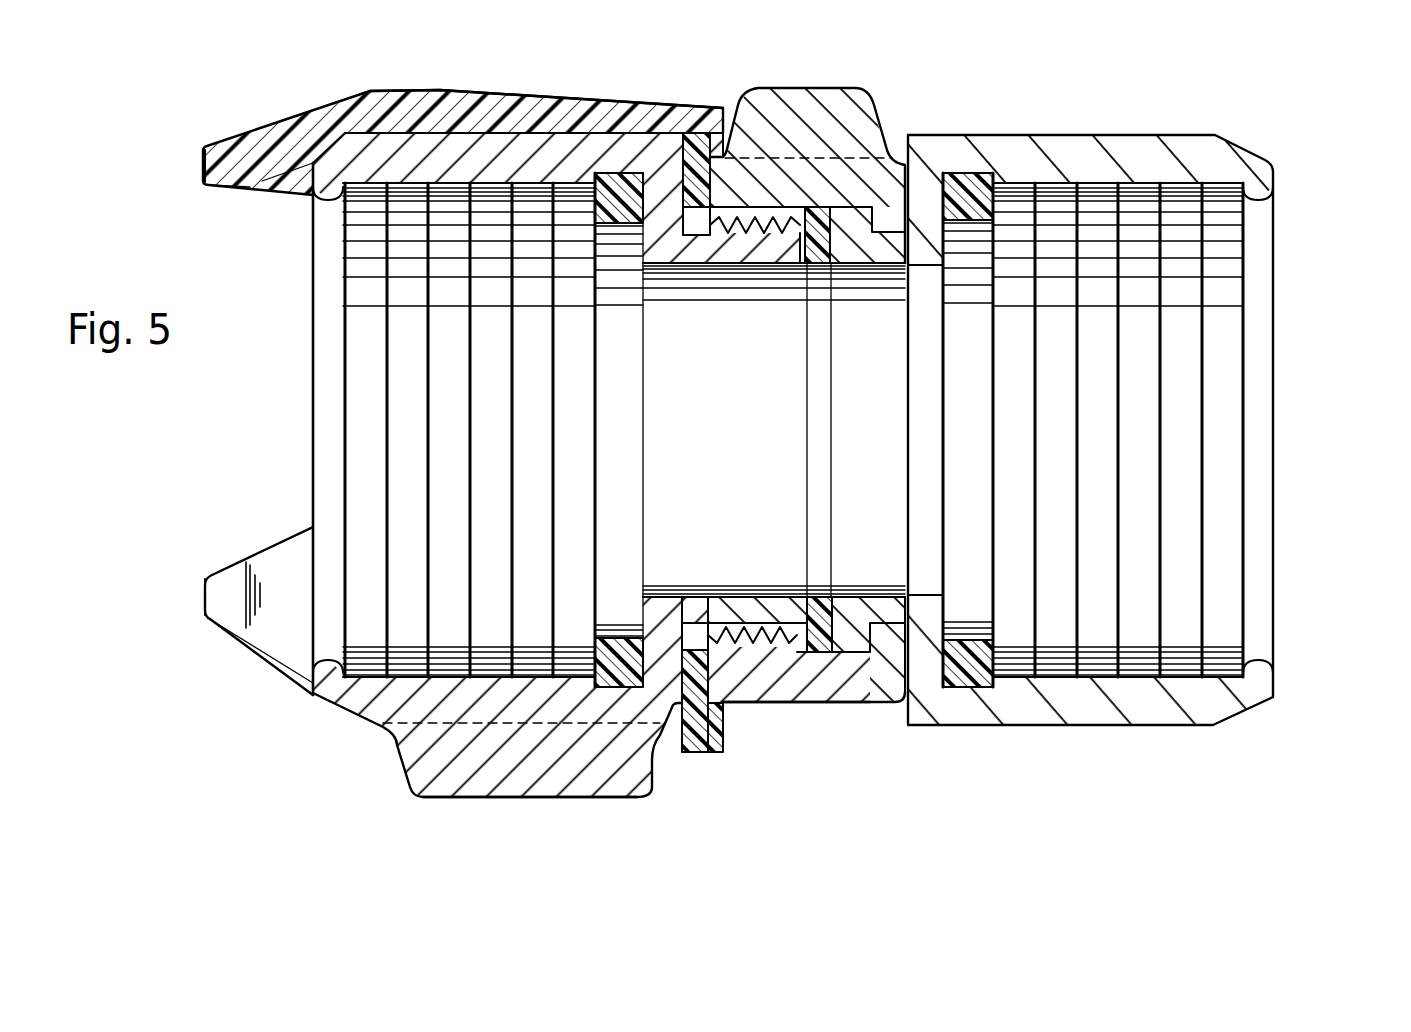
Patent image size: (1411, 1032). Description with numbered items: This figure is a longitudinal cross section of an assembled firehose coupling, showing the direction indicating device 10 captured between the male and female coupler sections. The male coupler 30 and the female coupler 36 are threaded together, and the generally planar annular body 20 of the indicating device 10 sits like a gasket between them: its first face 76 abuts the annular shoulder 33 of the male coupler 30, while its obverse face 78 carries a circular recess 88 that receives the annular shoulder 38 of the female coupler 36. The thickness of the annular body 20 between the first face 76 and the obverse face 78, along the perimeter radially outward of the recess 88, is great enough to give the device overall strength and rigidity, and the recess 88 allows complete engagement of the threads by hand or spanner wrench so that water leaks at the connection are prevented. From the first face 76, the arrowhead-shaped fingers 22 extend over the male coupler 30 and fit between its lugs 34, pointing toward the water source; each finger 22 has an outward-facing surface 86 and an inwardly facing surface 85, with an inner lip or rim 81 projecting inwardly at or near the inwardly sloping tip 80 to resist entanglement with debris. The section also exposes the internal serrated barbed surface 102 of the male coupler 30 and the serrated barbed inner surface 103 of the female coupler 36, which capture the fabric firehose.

The firehose direction indicating device 10 is at (749, 442).
The annular body 20 is at (700, 752).
The fingers 22 is at (420, 373).
The male coupler 30 is at (313, 293).
The annular shoulder of male coupler 33 is at (567, 492).
The lugs 34 is at (498, 798).
The female coupler 36 is at (1144, 430).
The annular shoulder of female coupler 38 is at (790, 704).
The first face 76 is at (672, 197).
The obverse face 78 is at (723, 720).
The tips 80 is at (203, 147).
The inner lip or rim 81 is at (222, 190).
The inwardly facing surface 85 is at (290, 160).
The outward-facing surface 86 is at (401, 89).
The circular recess 88 is at (714, 182).
The internal serrated barbed surface 102 is at (365, 375).
The serrated barbed inner surface 103 is at (1248, 383).